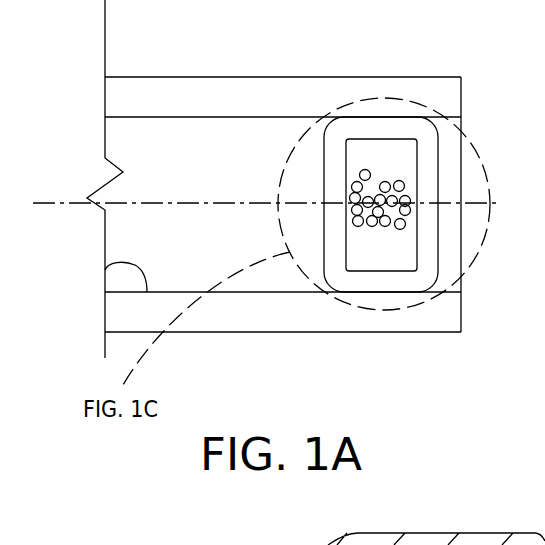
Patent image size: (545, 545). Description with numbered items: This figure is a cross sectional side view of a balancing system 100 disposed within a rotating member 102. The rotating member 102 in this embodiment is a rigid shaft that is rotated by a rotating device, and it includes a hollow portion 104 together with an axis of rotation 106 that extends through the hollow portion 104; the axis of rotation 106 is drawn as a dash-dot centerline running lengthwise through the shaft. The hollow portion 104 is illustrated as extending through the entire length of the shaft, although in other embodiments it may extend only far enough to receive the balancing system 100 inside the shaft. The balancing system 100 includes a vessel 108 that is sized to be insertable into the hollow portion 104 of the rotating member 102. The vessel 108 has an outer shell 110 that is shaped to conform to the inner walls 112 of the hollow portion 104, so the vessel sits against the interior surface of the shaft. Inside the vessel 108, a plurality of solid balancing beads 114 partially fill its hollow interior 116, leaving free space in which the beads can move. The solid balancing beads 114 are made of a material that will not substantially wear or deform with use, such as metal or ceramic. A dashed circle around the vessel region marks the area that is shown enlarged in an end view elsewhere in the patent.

The balancing system 100 is at (352, 101).
The rotating member 102 is at (215, 76).
The hollow portion 104 is at (130, 229).
The axis of rotation 106 is at (68, 200).
The vessel 108 is at (438, 152).
The outer shell 110 is at (398, 282).
The inner walls 112 is at (105, 270).
The solid balancing beads 114 is at (372, 227).
The hollow interior 116 is at (384, 150).